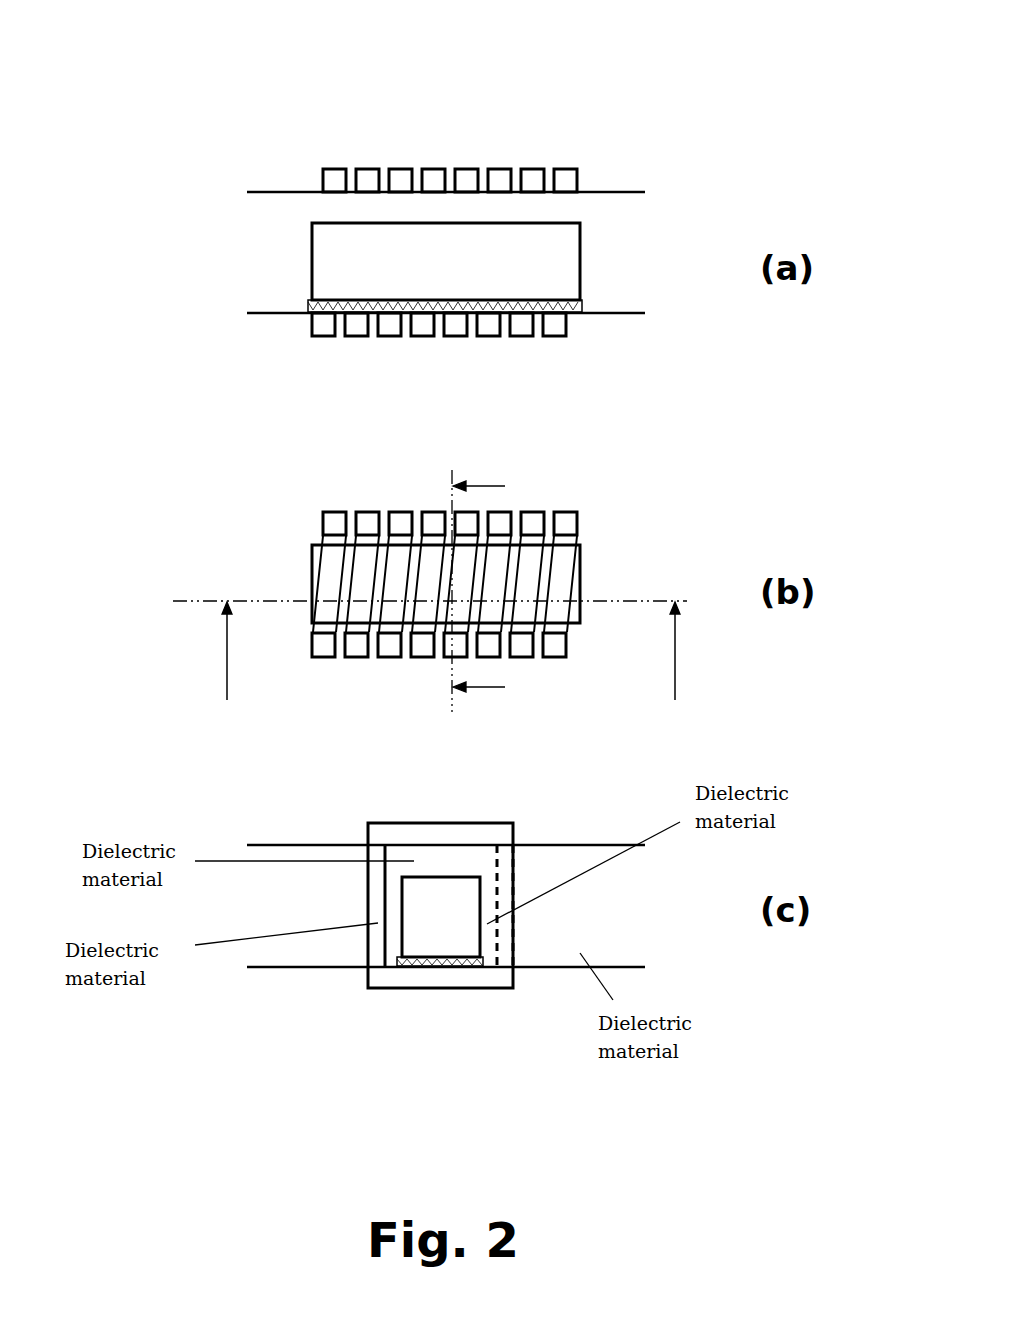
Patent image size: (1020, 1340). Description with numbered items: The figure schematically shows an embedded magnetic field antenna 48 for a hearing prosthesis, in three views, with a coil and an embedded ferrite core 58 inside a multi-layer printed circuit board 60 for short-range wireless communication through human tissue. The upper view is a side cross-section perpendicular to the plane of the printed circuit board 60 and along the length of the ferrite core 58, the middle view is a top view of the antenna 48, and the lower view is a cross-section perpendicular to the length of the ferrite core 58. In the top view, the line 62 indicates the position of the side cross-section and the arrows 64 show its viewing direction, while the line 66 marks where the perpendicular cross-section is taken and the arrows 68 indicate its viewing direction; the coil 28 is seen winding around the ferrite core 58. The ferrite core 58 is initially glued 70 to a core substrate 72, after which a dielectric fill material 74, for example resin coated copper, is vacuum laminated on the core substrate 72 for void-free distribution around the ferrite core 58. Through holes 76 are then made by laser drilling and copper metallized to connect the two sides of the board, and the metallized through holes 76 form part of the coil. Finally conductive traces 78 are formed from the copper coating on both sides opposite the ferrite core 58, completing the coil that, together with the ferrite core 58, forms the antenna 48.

The coil 28 is at (570, 575).
The embedded magnetic field antenna 48 is at (445, 96).
The ferrite core 58 is at (460, 285).
The multi-layer printed circuit board 60 is at (650, 210).
The line 62 is at (175, 602).
The arrows 64 is at (225, 662).
The line 66 is at (452, 470).
The arrows 68 is at (505, 486).
The glue 70 is at (585, 300).
The core substrate 72 is at (262, 315).
The dielectric fill material 74 is at (263, 273).
The metallized through holes 76 is at (372, 521).
The conductive traces 78 is at (337, 182).